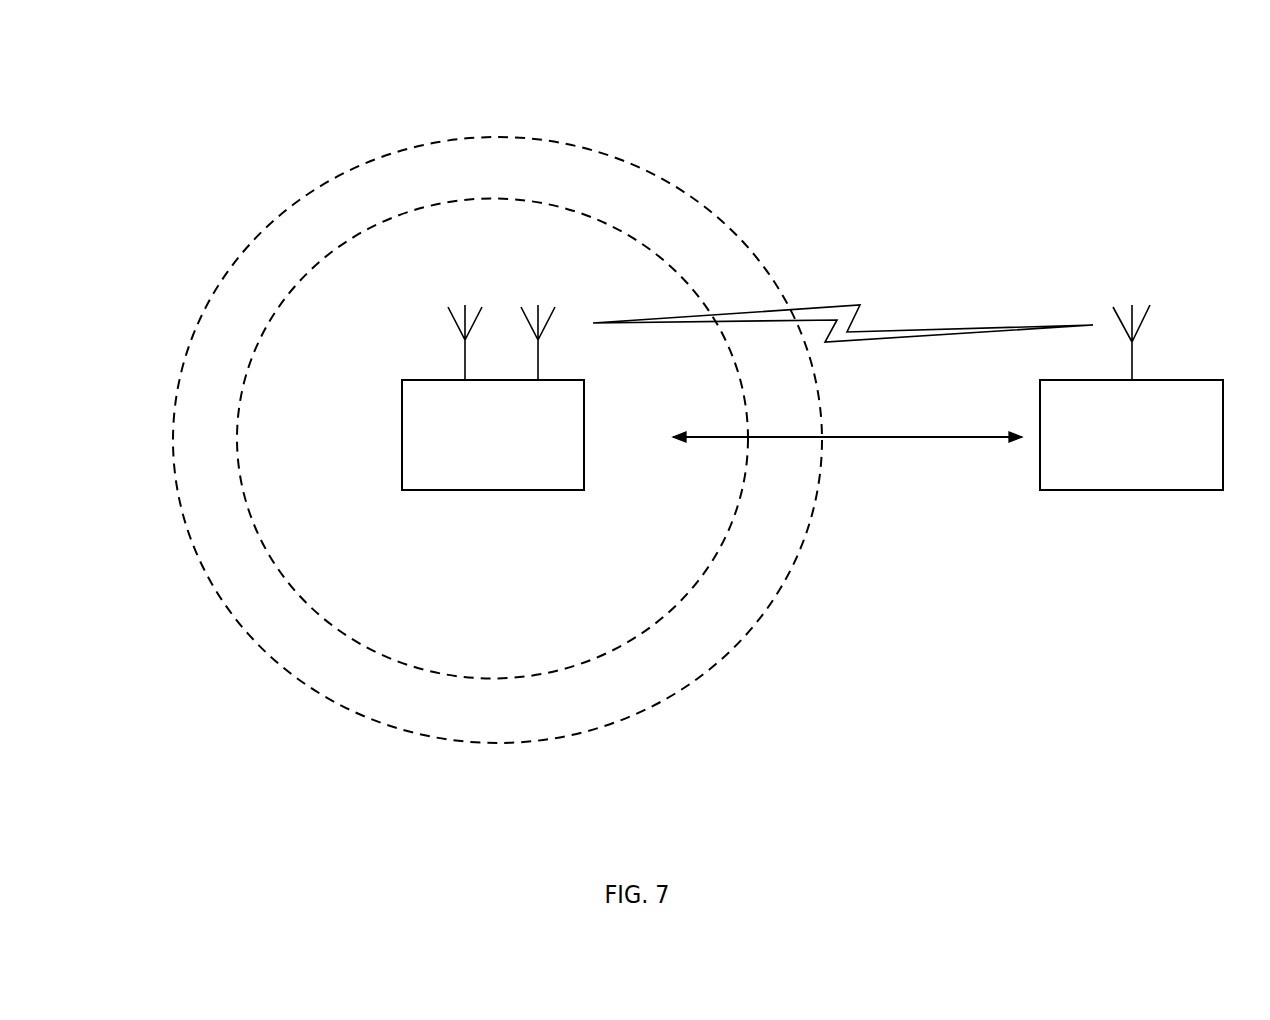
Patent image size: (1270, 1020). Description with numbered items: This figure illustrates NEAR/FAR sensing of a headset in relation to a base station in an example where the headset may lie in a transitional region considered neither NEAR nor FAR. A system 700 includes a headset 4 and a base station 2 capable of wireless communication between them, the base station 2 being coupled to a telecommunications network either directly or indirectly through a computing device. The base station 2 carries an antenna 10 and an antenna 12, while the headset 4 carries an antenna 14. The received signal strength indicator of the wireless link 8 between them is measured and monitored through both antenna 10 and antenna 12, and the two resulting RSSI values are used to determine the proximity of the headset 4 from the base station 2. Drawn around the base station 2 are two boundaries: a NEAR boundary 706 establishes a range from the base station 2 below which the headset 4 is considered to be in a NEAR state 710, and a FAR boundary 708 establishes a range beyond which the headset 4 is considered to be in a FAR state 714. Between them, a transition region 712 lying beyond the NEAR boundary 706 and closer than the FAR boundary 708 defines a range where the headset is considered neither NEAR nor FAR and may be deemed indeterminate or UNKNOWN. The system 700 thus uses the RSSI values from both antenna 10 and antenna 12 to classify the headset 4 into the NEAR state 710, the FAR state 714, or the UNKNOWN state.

The system 700 is at (605, 56).
The base station 2 is at (486, 380).
The headset 4 is at (1136, 385).
The wireless link 8 is at (843, 311).
The antenna 10 is at (450, 315).
The antenna 12 is at (525, 315).
The antenna 14 is at (1147, 320).
The NEAR boundary 706 is at (668, 612).
The FAR boundary 708 is at (730, 648).
The NEAR state 710 is at (844, 475).
The transition region 712 is at (773, 472).
The FAR state 714 is at (857, 490).